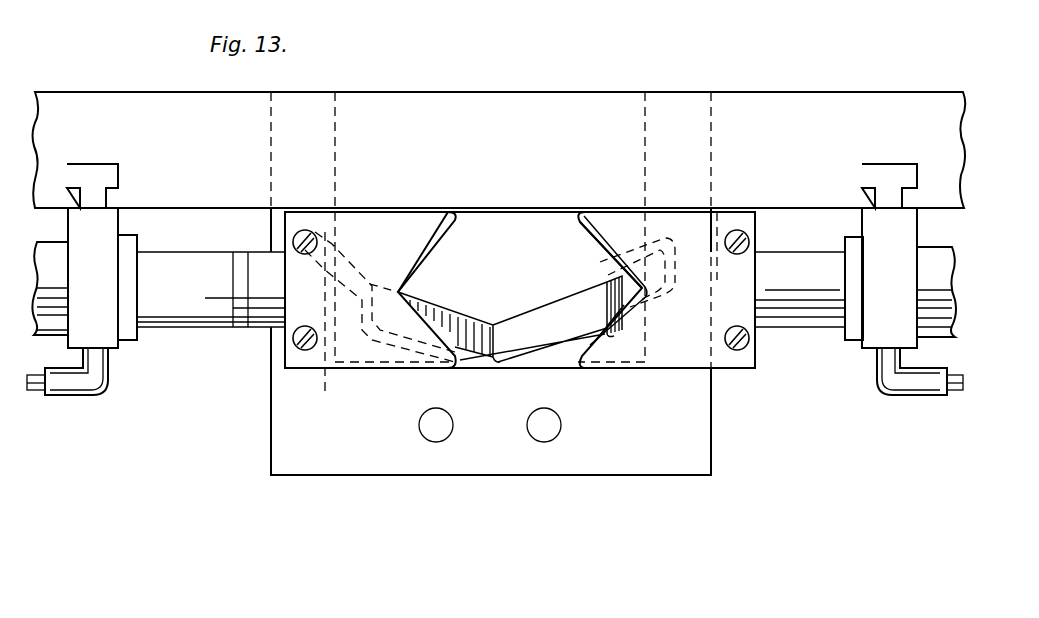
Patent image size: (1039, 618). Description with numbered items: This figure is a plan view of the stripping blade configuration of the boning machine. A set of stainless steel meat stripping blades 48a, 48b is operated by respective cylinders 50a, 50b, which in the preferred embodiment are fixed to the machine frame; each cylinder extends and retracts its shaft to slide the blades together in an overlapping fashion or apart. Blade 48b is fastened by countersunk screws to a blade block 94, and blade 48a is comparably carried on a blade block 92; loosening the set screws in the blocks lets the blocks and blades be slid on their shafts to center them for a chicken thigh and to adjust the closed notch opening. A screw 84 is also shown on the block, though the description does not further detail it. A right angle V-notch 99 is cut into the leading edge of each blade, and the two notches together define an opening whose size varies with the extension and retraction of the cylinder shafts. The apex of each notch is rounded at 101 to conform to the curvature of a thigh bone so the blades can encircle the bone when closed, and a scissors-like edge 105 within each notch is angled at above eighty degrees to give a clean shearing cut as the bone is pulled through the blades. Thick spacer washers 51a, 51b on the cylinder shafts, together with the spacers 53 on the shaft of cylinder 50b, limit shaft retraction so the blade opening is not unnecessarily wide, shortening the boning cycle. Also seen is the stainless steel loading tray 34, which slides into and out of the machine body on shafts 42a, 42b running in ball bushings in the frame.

The loading tray 34 is at (525, 325).
The shaft 42a is at (433, 435).
The shaft 42b is at (547, 435).
The meat stripping blade 48a is at (615, 215).
The meat stripping blade 48b is at (383, 222).
The cylinder 50a is at (875, 343).
The cylinder 50b is at (105, 338).
The spacer washer 51a is at (800, 318).
The spacer washer 51b is at (188, 289).
The spacers 53 is at (247, 234).
The screw 84 is at (746, 242).
The blade block 92 is at (710, 365).
The blade block 94 is at (475, 313).
The V-notch 99 is at (600, 247).
The rounded apex 101 is at (660, 318).
The scissors-like edge 105 is at (603, 347).